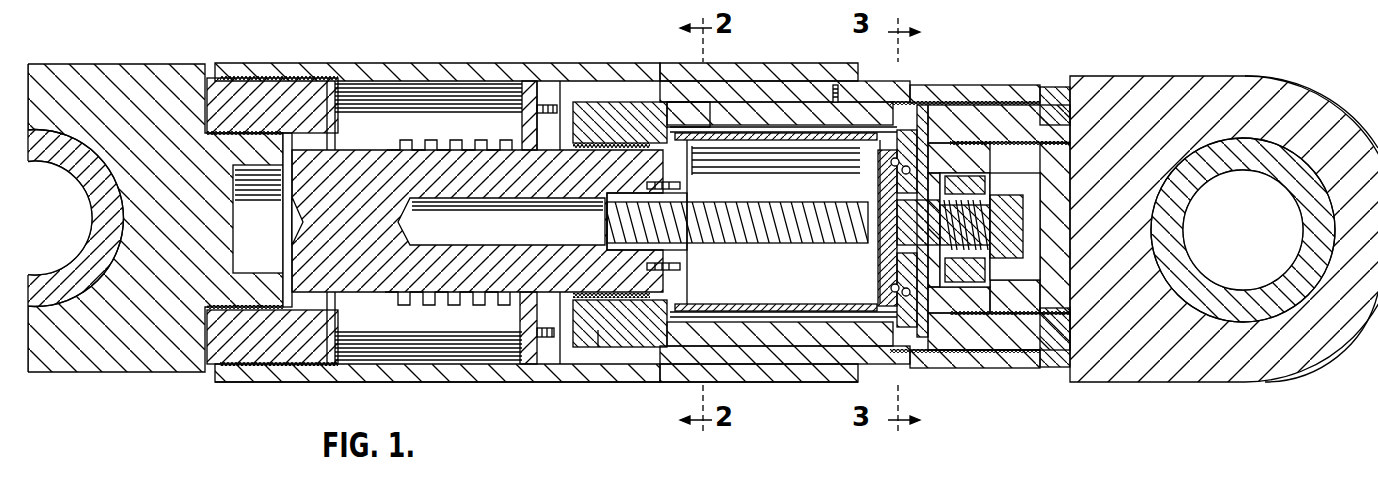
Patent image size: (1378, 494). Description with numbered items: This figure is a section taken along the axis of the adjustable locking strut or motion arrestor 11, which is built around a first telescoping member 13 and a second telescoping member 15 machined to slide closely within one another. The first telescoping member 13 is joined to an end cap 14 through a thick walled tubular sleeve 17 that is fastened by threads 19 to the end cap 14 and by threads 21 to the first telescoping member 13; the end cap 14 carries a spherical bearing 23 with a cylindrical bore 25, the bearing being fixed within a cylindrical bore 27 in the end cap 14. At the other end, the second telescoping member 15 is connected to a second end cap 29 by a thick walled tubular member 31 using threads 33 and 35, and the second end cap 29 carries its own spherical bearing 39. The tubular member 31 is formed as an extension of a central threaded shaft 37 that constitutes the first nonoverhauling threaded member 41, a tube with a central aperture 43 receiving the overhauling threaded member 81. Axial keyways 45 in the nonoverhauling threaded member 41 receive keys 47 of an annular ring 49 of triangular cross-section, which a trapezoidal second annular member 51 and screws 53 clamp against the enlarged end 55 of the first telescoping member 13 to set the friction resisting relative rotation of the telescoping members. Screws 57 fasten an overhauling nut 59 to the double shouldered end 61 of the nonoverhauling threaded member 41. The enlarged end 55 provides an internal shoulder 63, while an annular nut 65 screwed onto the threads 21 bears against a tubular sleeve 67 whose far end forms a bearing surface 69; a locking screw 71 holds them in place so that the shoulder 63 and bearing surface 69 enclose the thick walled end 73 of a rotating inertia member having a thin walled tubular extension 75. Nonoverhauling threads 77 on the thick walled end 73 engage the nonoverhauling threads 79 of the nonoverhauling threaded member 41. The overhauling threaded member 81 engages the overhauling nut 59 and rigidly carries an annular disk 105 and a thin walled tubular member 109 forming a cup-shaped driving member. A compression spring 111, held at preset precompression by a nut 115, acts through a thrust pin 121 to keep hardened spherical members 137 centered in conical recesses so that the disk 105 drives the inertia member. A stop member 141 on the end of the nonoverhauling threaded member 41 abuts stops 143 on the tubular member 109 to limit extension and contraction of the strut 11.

The adjustable locking strut 11 is at (518, 384).
The first telescoping member 13 is at (950, 85).
The end cap 14 is at (1148, 82).
The second telescoping member 15 is at (423, 64).
The tubular sleeve 17 is at (990, 352).
The threads 19 is at (1028, 372).
The threads 21 is at (960, 372).
The spherical bearing 23 is at (1276, 156).
The cylindrical bore 25 is at (1221, 183).
The cylindrical bore 27 is at (1243, 142).
The second end cap 29 is at (106, 370).
The tubular member 31 is at (242, 352).
The threads 33 is at (212, 313).
The threads 35 is at (284, 360).
The central threaded shaft 37 is at (347, 264).
The spherical bearing 39 is at (56, 306).
The first nonoverhauling threaded member 41 is at (452, 276).
The central aperture 43 is at (494, 249).
The keyways 45 is at (394, 142).
The keys 47 is at (521, 146).
The annular ring 49 is at (540, 128).
The second annular member 51 is at (533, 334).
The screws 53 is at (548, 104).
The enlarged end 55 is at (560, 318).
The screws 57 is at (690, 266).
The overhauling nut 59 is at (690, 252).
The double shouldered end 61 is at (598, 330).
The internal shoulder 63 is at (587, 347).
The annular nut 65 is at (925, 118).
The tubular sleeve 67 is at (740, 85).
The bearing surface 69 is at (655, 102).
The locking screw 71 is at (835, 86).
The thick walled end 73 is at (600, 104).
The thin walled tubular extension 75 is at (768, 126).
The nonoverhauling threads 77 is at (590, 148).
The nonoverhauling threads 79 is at (596, 155).
The overhauling threaded member 81 is at (780, 204).
The annular disk 105 is at (877, 277).
The thin walled tubular member 109 is at (767, 311).
The compression spring 111 is at (990, 262).
The nut 115 is at (1013, 265).
The thrust pin 121 is at (875, 257).
The spherical members 137 is at (877, 297).
The stop member 141 is at (709, 160).
The stops 143 is at (697, 150).